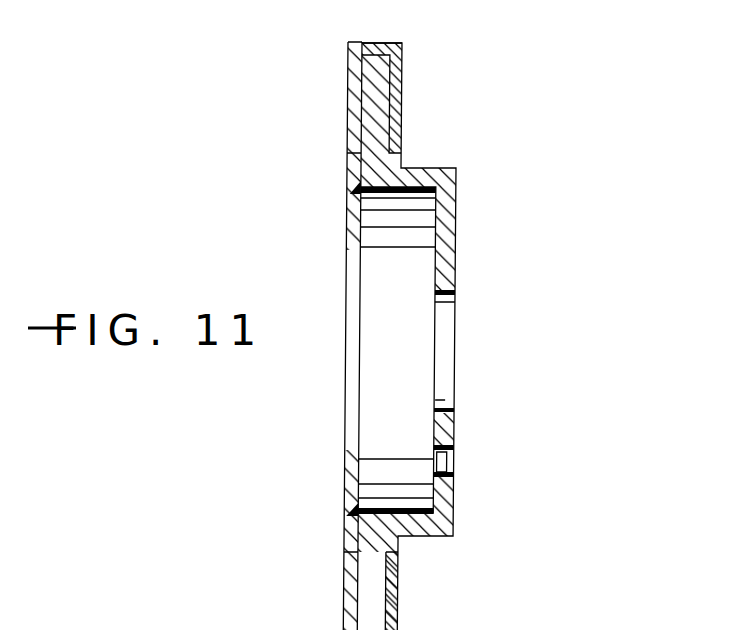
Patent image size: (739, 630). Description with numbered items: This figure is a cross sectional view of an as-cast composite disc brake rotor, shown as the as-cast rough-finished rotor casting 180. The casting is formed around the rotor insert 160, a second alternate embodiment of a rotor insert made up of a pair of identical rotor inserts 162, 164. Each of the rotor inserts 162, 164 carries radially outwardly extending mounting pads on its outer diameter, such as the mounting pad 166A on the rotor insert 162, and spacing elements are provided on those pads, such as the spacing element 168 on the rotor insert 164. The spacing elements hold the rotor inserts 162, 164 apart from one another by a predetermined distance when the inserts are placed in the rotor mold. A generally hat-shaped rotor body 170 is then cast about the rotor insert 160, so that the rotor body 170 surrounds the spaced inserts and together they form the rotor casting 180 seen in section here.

The rotor insert 160 is at (398, 603).
The rotor insert 162 is at (358, 120).
The rotor insert 164 is at (394, 92).
The mounting pad 166A is at (64, 622).
The spacing element 168 is at (385, 44).
The rotor body 170 is at (430, 165).
The rotor casting 180 is at (509, 196).